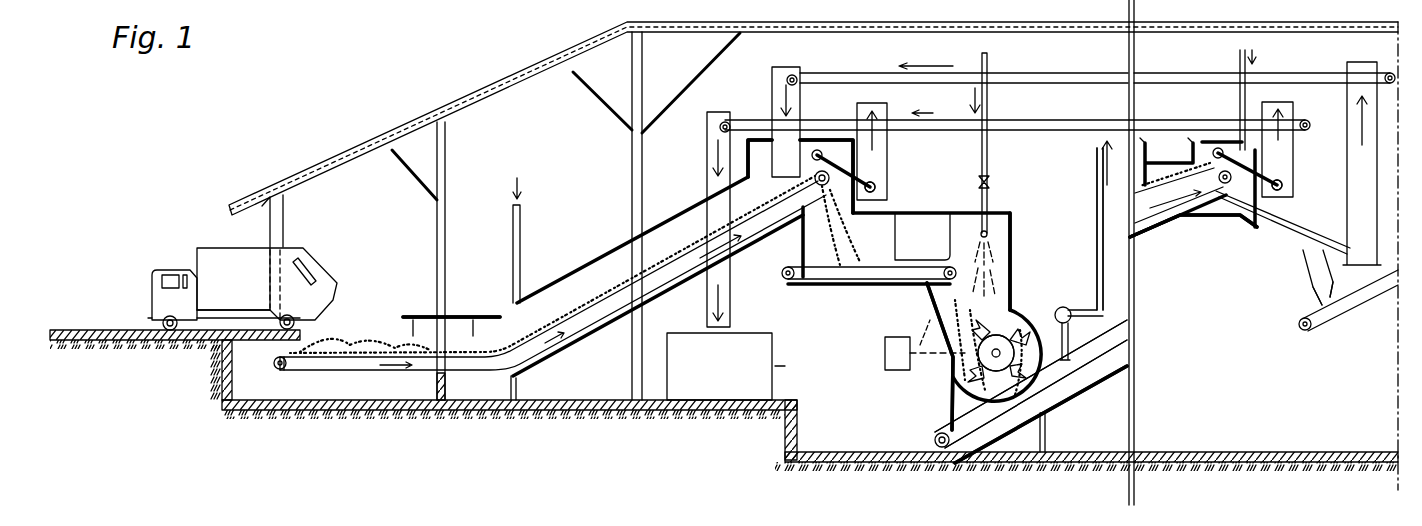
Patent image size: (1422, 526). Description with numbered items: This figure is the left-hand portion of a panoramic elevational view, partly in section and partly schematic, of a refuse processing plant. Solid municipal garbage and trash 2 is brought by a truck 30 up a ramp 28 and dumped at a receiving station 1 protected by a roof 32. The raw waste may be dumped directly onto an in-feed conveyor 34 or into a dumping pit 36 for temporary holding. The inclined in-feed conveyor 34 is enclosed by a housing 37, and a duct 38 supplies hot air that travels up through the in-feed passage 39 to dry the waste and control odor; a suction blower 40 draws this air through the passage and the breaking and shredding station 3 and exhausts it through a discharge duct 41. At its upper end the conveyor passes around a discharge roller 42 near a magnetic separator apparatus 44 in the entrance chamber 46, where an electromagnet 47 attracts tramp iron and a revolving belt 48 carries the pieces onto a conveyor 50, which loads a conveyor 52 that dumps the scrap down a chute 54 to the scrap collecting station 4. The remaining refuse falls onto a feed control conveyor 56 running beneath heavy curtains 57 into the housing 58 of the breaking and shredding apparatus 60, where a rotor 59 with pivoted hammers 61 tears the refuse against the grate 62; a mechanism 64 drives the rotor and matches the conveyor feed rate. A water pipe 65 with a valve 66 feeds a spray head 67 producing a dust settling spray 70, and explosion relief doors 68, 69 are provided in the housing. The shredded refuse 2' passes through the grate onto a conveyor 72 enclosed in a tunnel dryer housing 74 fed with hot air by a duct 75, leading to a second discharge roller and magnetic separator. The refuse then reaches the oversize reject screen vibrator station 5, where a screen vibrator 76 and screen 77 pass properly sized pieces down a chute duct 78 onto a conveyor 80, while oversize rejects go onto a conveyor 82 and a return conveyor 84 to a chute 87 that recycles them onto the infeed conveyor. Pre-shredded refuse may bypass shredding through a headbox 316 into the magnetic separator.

The receiving station 1 is at (830, 252).
The solid municipal garbage and trash 2 is at (551, 270).
The broken and shredded refuse 2' is at (1031, 391).
The breaking and shredding station 3 is at (966, 176).
The scrap iron and steel collecting station 4 is at (728, 376).
The oversize reject screen vibrator station 5 is at (1277, 236).
The ramp 28 is at (65, 328).
The truck 30 is at (203, 246).
The roof 32 is at (303, 163).
The in-feed conveyor 34 is at (458, 350).
The dumping pit 36 is at (360, 408).
The conveyor housing 37 is at (600, 258).
The duct 38 is at (522, 228).
The in-feed passage 39 is at (660, 240).
The suction blower 40 is at (1068, 305).
The discharge duct 41 is at (1096, 200).
The conveyor discharge roller 42 is at (805, 230).
The magnetic separator apparatus 44 is at (879, 179).
The entrance chamber 46 is at (808, 143).
The electromagnet 47 is at (873, 182).
The revolving belt 48 is at (830, 150).
The conveyor 50 is at (892, 186).
The conveyor 52 is at (1030, 120).
The chute 54 is at (706, 146).
The feed control conveyor 56 is at (890, 286).
The heavy curtains 57 is at (420, 347).
The housing 58 is at (1063, 307).
The rotor 59 is at (975, 345).
The breaking and shredding apparatus 60 is at (1034, 306).
The pivoted hammers 61 is at (960, 372).
The grate 62 is at (940, 415).
The drive mechanism 64 is at (882, 355).
The water pipe 65 is at (990, 155).
The valve 66 is at (990, 181).
The spray head 67 is at (992, 225).
The explosion relief door 68 is at (932, 322).
The explosion relief door 69 is at (1018, 262).
The dust settling spray 70 is at (1015, 236).
The conveyor 72 is at (1088, 382).
The housing 74 is at (1046, 414).
The duct 75 is at (1238, 57).
The screen vibrator 76 is at (1290, 230).
The screen 77 is at (1300, 258).
The chute duct 78 is at (1305, 310).
The conveyor 80 is at (1365, 300).
The conveyor 82 is at (1350, 186).
The return conveyor 84 is at (834, 73).
The chute 87 is at (764, 94).
The headbox 316 is at (1132, 110).